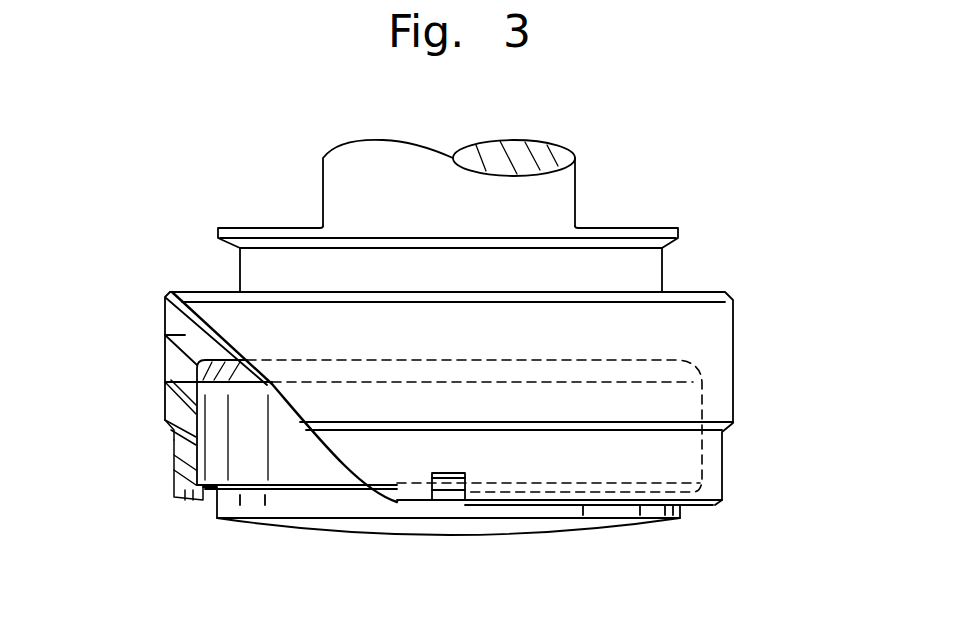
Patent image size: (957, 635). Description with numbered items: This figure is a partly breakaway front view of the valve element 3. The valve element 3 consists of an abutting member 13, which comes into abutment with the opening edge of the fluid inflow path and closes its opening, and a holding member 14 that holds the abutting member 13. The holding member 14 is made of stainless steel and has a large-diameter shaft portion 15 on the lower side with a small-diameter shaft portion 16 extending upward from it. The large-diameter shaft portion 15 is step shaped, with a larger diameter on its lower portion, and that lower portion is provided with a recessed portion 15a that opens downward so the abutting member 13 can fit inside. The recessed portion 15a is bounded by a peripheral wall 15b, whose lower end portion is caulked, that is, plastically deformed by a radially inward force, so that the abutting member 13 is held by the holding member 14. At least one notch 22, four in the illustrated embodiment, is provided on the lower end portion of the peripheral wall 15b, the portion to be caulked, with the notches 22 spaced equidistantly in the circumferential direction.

The valve element 3 is at (749, 292).
The abutting member 13 is at (288, 465).
The holding member 14 is at (733, 350).
The large-diameter shaft portion 15 is at (165, 368).
The recessed portion 15a is at (196, 430).
The peripheral wall 15b is at (183, 455).
The small-diameter shaft portion 16 is at (332, 178).
The notch 22 is at (197, 500).